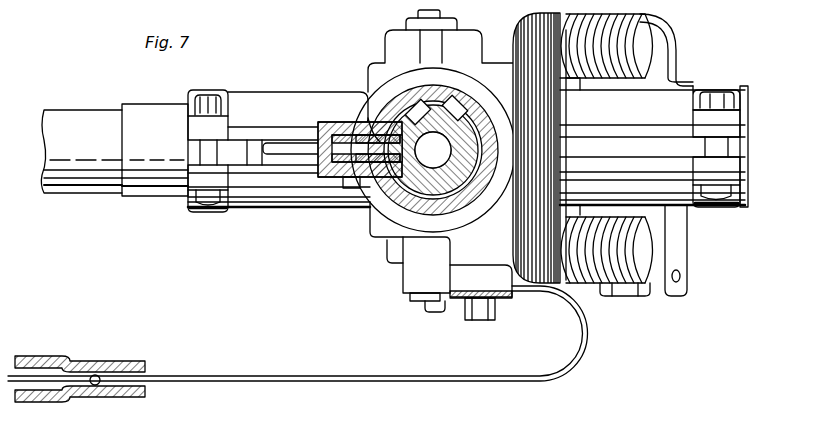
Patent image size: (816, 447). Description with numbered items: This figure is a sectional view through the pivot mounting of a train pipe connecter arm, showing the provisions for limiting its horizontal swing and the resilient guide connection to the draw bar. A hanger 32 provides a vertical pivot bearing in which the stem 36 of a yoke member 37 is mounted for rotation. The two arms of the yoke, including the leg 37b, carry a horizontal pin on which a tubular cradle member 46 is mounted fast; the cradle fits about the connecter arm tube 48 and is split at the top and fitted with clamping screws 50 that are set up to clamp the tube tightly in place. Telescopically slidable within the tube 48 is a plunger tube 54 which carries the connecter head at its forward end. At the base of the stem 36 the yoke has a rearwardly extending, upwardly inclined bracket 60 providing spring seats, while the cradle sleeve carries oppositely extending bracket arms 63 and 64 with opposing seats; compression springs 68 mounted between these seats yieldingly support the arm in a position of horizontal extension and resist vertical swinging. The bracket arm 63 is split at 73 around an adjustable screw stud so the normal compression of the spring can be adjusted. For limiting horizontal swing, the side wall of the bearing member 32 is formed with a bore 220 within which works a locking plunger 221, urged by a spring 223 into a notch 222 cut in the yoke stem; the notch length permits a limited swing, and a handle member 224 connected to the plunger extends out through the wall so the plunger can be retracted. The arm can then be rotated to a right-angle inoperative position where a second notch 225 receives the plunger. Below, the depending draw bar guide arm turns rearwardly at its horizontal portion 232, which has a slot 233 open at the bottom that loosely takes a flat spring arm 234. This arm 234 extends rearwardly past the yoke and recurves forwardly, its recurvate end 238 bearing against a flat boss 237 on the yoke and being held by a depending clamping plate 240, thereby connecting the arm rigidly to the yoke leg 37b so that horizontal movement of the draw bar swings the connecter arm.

The plunger tube 54 is at (81, 151).
The connecter arm tube 48 is at (155, 150).
The clamping screws 50 is at (207, 198).
The cradle member 46 is at (266, 103).
The handle member 224 is at (290, 152).
The bore 220 is at (340, 174).
The spring 223 is at (335, 133).
The notch 222 is at (396, 133).
The locking plunger 221 is at (352, 190).
The hanger 32 is at (418, 190).
The stem 36 is at (400, 202).
The notch 225 is at (416, 108).
The yoke member 37 is at (470, 60).
The yoke arm 37b is at (400, 282).
The boss 237 is at (481, 281).
The clamping plate 240 is at (466, 305).
The recurvate end 238 is at (536, 295).
The arm 234 is at (210, 382).
The bracket 60 is at (565, 118).
The compression springs 68 is at (636, 61).
The bracket arm 64 is at (670, 36).
The bracket arm 63 is at (668, 285).
The split 73 is at (642, 297).
The rearward horizontal arm portion 232 is at (70, 358).
The slot 233 is at (93, 386).